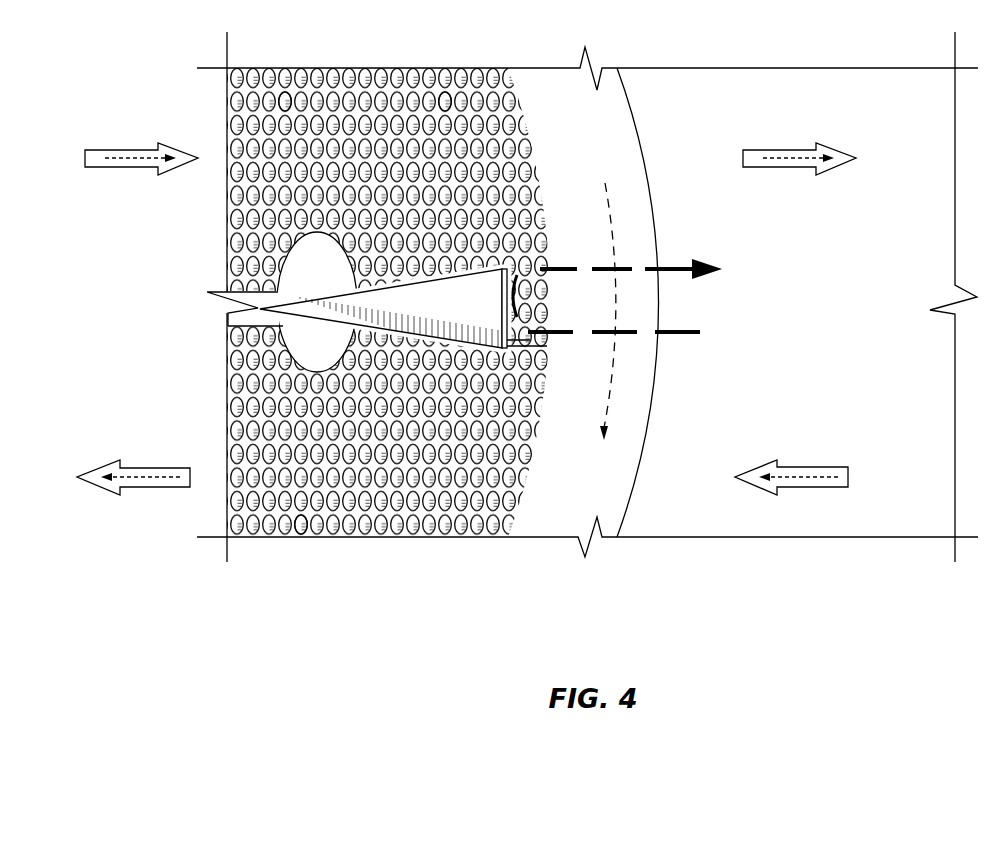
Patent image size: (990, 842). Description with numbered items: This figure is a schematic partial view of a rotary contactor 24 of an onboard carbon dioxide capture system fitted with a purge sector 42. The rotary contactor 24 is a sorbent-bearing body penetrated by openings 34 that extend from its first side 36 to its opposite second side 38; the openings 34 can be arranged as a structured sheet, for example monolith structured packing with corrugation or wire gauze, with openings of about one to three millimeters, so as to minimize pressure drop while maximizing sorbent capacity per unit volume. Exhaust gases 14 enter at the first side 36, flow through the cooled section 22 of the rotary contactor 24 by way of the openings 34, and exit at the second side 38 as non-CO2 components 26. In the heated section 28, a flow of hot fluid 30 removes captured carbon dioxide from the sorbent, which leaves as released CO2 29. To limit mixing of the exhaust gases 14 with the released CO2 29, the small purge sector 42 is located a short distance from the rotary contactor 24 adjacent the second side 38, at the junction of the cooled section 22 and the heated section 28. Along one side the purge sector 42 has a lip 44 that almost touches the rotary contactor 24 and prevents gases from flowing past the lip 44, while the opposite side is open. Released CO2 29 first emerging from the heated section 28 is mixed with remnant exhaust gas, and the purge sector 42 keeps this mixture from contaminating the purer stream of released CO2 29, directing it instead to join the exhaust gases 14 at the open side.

The exhaust gases 14 is at (122, 170).
The cooled section 22 is at (343, 93).
The rotary contactor 24 is at (647, 42).
The non-CO2 components 26 is at (785, 170).
The heated section 28 is at (307, 515).
The released CO2 29 is at (155, 467).
The hot fluid 30 is at (812, 467).
The openings 34 is at (448, 100).
The first side 36 is at (282, 110).
The second side 38 is at (648, 422).
The purge sector 42 is at (470, 309).
The lip 44 is at (532, 360).